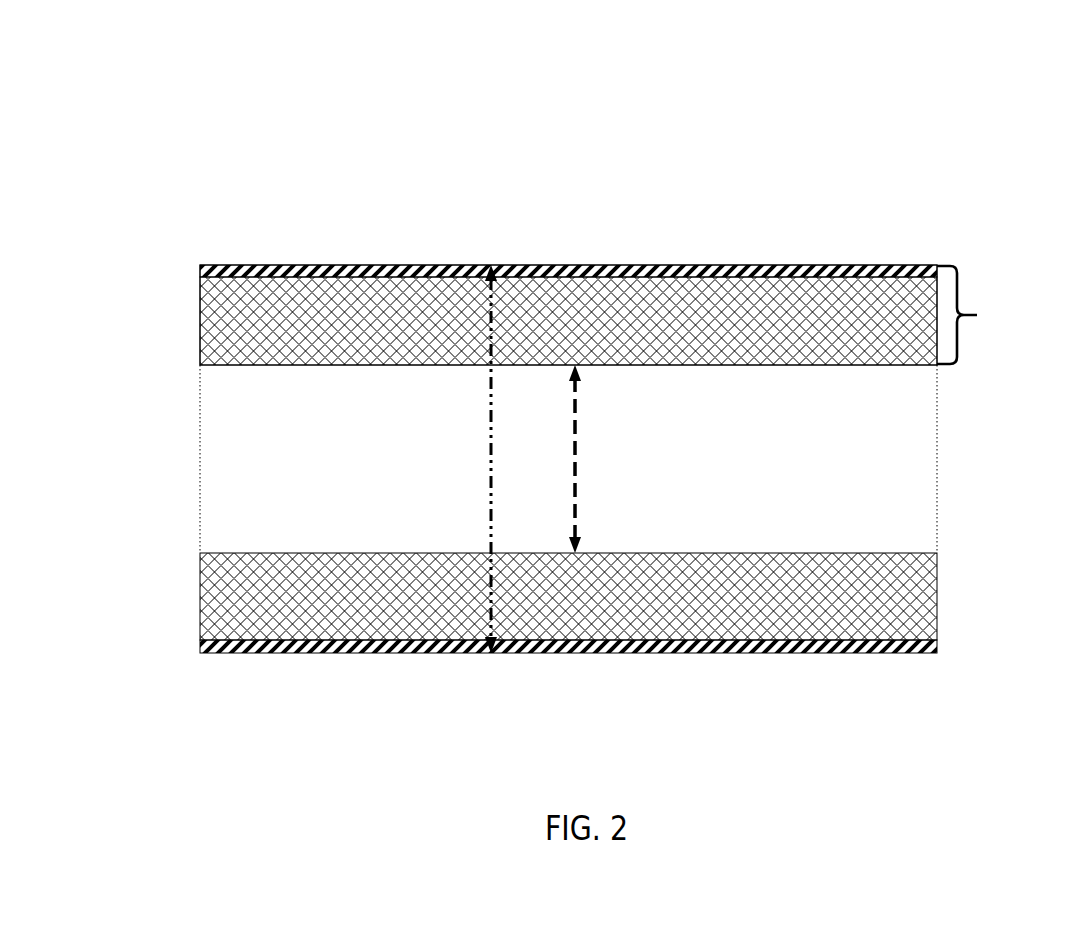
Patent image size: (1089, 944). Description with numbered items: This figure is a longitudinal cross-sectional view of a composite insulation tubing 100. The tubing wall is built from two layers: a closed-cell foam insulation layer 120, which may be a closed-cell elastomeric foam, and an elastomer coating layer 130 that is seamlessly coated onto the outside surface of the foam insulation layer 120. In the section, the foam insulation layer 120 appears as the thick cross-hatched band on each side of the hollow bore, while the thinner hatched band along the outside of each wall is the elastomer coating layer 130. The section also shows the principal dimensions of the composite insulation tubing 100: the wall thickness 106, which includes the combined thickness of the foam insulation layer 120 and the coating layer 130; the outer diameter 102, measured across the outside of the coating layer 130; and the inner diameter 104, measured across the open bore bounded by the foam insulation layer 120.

The composite insulation tubing 100 is at (568, 333).
The outer diameter 102 is at (492, 405).
The inner diameter 104 is at (577, 435).
The wall thickness 106 is at (625, 315).
The closed-cell foam insulation layer 120 is at (365, 334).
The elastomer coating layer 130 is at (822, 272).